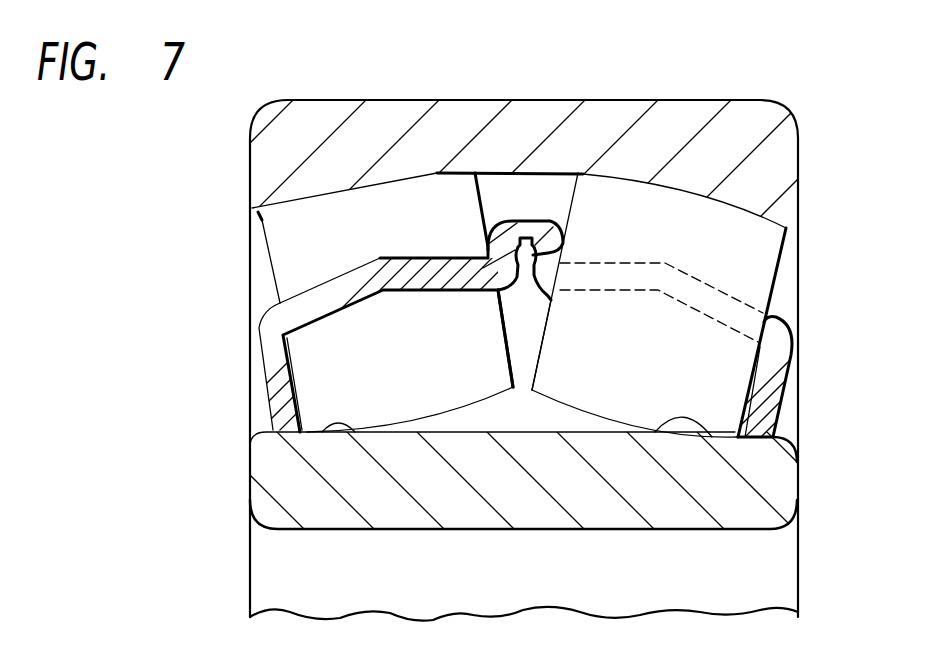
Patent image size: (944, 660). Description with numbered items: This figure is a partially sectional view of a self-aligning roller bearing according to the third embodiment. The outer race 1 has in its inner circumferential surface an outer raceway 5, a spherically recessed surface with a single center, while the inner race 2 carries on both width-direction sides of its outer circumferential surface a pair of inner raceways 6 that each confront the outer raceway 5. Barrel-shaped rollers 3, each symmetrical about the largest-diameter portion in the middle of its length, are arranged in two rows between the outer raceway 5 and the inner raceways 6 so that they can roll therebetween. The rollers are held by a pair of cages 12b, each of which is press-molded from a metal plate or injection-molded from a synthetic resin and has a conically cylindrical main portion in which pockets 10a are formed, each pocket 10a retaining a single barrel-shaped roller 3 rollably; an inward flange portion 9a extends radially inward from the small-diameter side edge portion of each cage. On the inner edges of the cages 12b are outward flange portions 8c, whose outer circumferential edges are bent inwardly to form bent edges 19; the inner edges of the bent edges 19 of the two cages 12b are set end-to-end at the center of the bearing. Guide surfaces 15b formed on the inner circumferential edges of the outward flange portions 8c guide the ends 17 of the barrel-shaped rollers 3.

The outer race 1 is at (733, 123).
The inner race 2 is at (775, 497).
The barrel-shaped roller 3 is at (287, 250).
The outer raceway 5 is at (697, 196).
The inner raceway 6 is at (330, 430).
The outward flange portion 8c is at (507, 232).
The inward flange portion 9a is at (270, 397).
The pocket 10a is at (756, 328).
The cage 12b is at (263, 343).
The guide surface 15b is at (483, 243).
The end of barrel-shaped roller 17 is at (500, 378).
The bent edge 19 is at (523, 222).